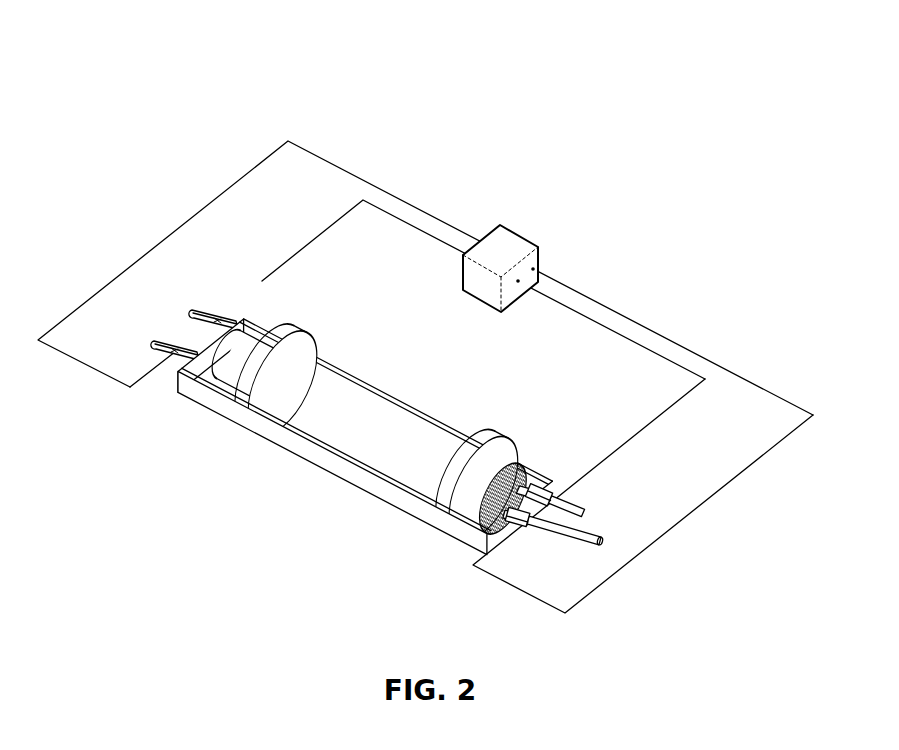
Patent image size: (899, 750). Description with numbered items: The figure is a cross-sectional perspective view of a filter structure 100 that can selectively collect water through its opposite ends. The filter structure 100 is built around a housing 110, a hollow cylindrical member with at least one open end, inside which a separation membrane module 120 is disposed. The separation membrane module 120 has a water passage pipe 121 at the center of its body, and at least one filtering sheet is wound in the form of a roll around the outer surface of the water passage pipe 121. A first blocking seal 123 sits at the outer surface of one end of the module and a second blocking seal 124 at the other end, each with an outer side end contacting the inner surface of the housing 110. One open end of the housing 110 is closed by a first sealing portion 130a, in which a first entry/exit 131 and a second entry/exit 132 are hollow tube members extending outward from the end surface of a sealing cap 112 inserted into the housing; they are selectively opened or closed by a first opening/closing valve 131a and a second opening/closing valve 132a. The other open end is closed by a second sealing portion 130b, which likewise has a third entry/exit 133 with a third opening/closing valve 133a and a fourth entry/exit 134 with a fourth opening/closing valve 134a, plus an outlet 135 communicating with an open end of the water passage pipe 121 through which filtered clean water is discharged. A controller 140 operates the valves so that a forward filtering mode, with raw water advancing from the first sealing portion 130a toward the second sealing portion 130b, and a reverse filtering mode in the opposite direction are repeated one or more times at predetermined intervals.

The filter structure 100 is at (556, 94).
The housing 110 is at (380, 409).
The sealing cap 112 is at (285, 336).
The separation membrane module 120 is at (380, 407).
The water passage pipe 121 is at (522, 470).
The first blocking seal 123 is at (310, 338).
The second blocking seal 124 is at (506, 440).
The first sealing portion 130a is at (177, 254).
The second sealing portion 130b is at (696, 462).
The first entry/exit 131 is at (236, 276).
The first opening/closing valve 131a is at (222, 318).
The second entry/exit 132 is at (157, 313).
The second opening/closing valve 132a is at (178, 349).
The third entry/exit 133 is at (602, 485).
The third opening/closing valve 133a is at (553, 500).
The fourth entry/exit 134 is at (568, 577).
The fourth opening/closing valve 134a is at (516, 538).
The outlet 135 is at (598, 548).
The controller 140 is at (520, 234).